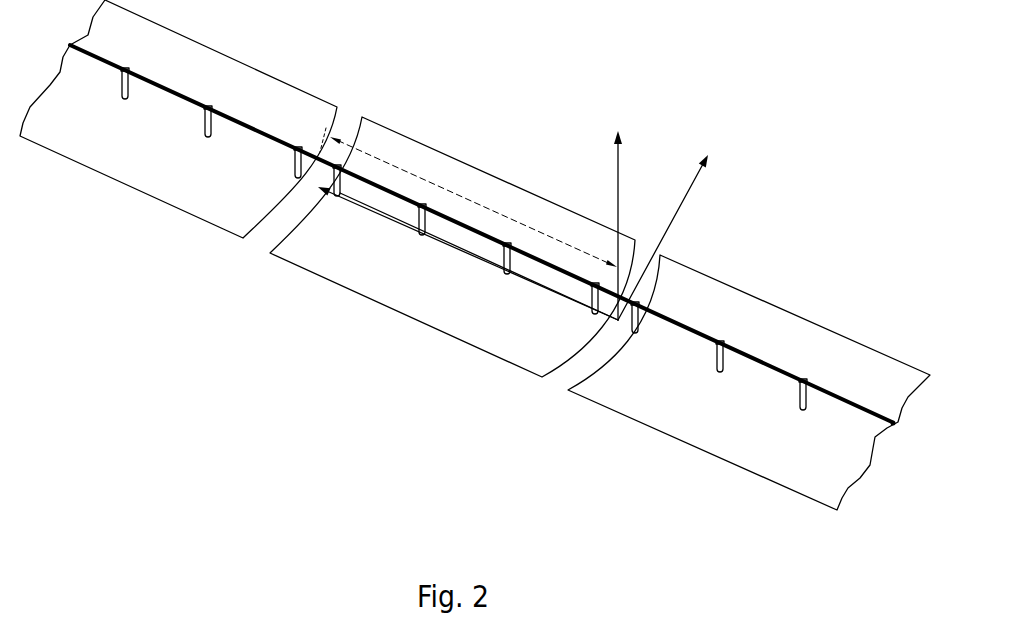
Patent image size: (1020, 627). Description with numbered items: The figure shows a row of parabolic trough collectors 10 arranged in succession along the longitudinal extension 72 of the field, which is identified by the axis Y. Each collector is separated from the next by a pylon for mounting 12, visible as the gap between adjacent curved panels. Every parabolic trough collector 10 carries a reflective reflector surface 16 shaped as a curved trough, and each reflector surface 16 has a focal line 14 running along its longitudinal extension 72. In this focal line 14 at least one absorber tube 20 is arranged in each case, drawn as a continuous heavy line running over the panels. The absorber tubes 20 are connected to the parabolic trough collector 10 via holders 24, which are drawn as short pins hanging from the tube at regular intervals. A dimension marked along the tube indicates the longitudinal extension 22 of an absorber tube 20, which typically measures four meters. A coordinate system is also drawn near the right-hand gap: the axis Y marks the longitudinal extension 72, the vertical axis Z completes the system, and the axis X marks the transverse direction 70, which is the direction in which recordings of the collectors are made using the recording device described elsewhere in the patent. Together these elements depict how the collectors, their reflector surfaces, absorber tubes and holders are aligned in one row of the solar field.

The parabolic trough collector 10 is at (118, 198).
The pylon for mounting 12 is at (262, 243).
The focal line 14 is at (250, 124).
The reflector surface 16 is at (117, 162).
The absorber tube 20 is at (187, 103).
The longitudinal extension of the absorber tube 22 is at (470, 200).
The holder 24 is at (212, 136).
The transverse direction 70 is at (676, 217).
The longitudinal extension 72 is at (353, 203).